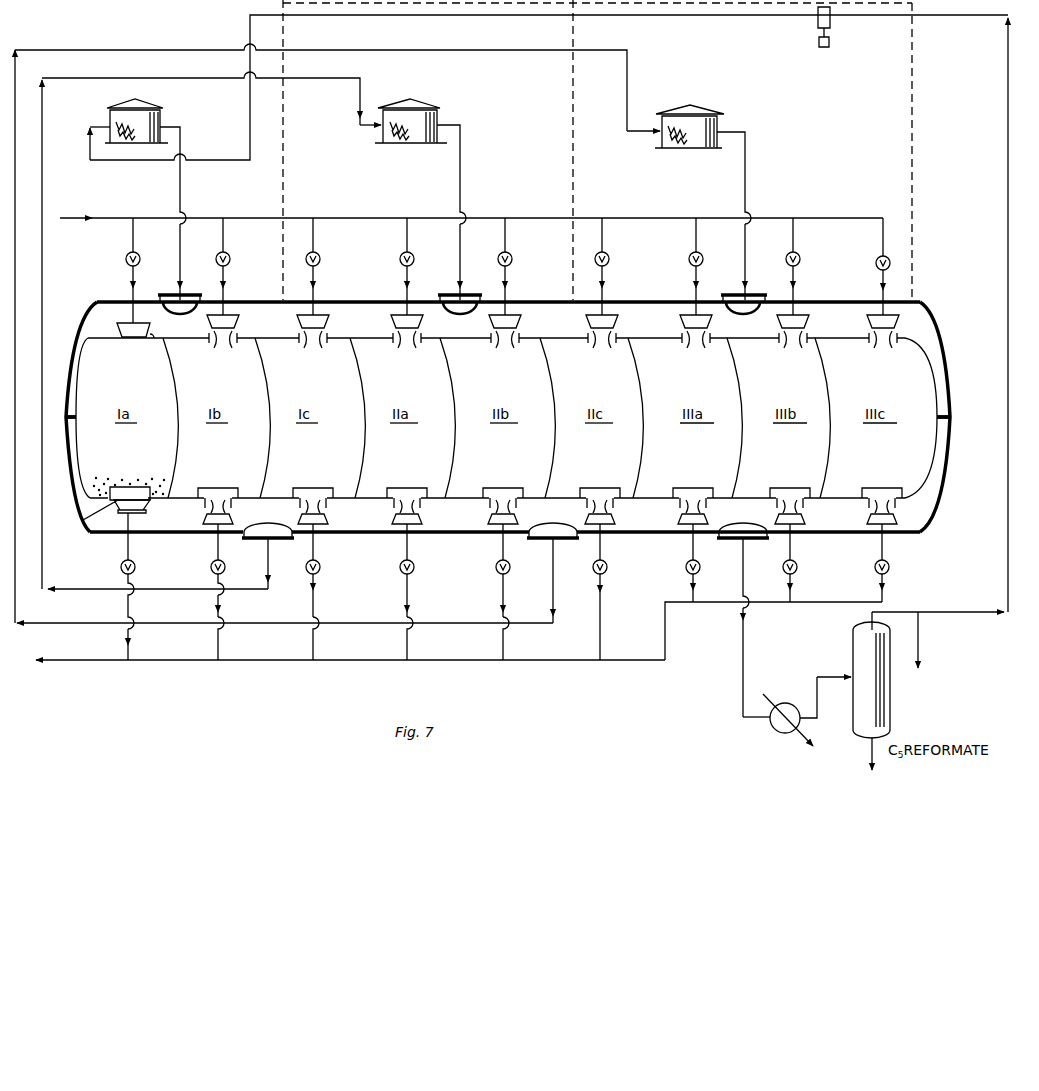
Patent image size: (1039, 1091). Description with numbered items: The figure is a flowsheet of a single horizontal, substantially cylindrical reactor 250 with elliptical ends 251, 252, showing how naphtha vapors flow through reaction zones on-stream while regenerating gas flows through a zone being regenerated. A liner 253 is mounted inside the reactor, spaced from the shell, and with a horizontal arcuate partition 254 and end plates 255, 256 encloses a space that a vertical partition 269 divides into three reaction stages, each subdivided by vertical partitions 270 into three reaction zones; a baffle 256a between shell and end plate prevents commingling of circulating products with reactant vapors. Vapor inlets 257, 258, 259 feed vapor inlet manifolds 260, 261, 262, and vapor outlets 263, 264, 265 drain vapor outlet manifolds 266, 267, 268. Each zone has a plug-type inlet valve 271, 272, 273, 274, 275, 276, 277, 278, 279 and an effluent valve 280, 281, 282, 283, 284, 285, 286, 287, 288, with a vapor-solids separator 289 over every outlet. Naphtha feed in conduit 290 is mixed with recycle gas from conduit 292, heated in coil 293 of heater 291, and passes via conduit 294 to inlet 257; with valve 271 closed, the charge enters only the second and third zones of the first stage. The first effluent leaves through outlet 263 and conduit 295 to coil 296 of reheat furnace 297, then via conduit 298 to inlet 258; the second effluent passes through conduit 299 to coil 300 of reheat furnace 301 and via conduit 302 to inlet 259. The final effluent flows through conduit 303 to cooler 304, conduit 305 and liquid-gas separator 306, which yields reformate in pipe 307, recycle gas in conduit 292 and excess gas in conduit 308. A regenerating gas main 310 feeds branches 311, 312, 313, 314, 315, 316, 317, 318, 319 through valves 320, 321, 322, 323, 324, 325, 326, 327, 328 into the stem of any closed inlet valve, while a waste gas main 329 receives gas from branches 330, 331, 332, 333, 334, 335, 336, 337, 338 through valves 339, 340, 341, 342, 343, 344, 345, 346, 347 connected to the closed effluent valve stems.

The reactor 250 is at (912, 300).
The elliptical end 251 is at (93, 303).
The elliptical end 252 is at (938, 339).
The liner 253 is at (170, 498).
The horizontal arcuate partition 254 is at (300, 350).
The end plate 255 is at (80, 392).
The end plate 256 is at (946, 394).
The baffle 256a is at (72, 420).
The vapor inlet 257 is at (217, 282).
The vapor inlet 258 is at (494, 283).
The vapor inlet 259 is at (782, 284).
The vapor inlet manifold 260 is at (196, 332).
The vapor inlet manifold 261 is at (562, 333).
The vapor inlet manifold 262 is at (858, 333).
The vapor outlet 263 is at (294, 540).
The vapor outlet 264 is at (586, 540).
The vapor outlet 265 is at (770, 540).
The vapor outlet manifold 266 is at (170, 534).
The vapor outlet manifold 267 is at (433, 534).
The vapor outlet manifold 268 is at (808, 534).
The vertical partition 269 is at (362, 371).
The vertical partition 270 is at (176, 373).
The reaction zone vapor inlet valve 271 is at (152, 342).
The reaction zone vapor inlet valve 272 is at (238, 317).
The reaction zone vapor inlet valve 273 is at (326, 319).
The reaction zone vapor inlet valve 274 is at (430, 299).
The reaction zone vapor inlet valve 275 is at (545, 303).
The reaction zone vapor inlet valve 276 is at (625, 321).
The reaction zone vapor inlet valve 277 is at (687, 331).
The reaction zone vapor inlet valve 278 is at (804, 316).
The reaction zone vapor inlet valve 279 is at (902, 336).
The vapor outlet valve 280 is at (83, 520).
The vapor outlet valve 281 is at (208, 509).
The vapor outlet valve 282 is at (305, 506).
The vapor outlet valve 283 is at (405, 503).
The vapor outlet valve 284 is at (494, 505).
The vapor outlet valve 285 is at (590, 504).
The vapor outlet valve 286 is at (686, 507).
The vapor outlet valve 287 is at (780, 505).
The vapor outlet valve 288 is at (872, 505).
The vapor-solids separator 289 is at (135, 487).
The conduit 290 is at (90, 178).
The heater 291 is at (160, 112).
The conduit 292 is at (748, 17).
The coil 293 is at (118, 145).
The conduit 294 is at (180, 178).
The conduit 295 is at (48, 548).
The coil 296 is at (392, 145).
The heater 297 is at (425, 104).
The conduit 298 is at (460, 163).
The conduit 299 is at (490, 52).
The coil 300 is at (680, 150).
The reheat furnace 301 is at (727, 96).
The conduit 302 is at (745, 165).
The conduit 303 is at (745, 645).
The cooler 304 is at (784, 705).
The conduit 305 is at (834, 678).
The liquid-gas separator 306 is at (890, 692).
The pipe 307 is at (871, 749).
The conduit 308 is at (918, 637).
The regenerating gas main 310 is at (393, 218).
The regenerating gas main branch 311 is at (133, 238).
The regenerating gas main branch 312 is at (223, 238).
The regenerating gas main branch 313 is at (313, 238).
The regenerating gas main branch 314 is at (407, 238).
The regenerating gas main branch 315 is at (505, 238).
The regenerating gas main branch 316 is at (602, 238).
The regenerating gas main branch 317 is at (696, 238).
The regenerating gas main branch 318 is at (793, 238).
The regenerating gas main branch 319 is at (882, 250).
The block valve 320 is at (140, 261).
The block valve 321 is at (230, 261).
The block valve 322 is at (320, 261).
The block valve 323 is at (414, 261).
The block valve 324 is at (512, 258).
The block valve 325 is at (609, 261).
The block valve 326 is at (703, 260).
The block valve 327 is at (800, 260).
The block valve 328 is at (876, 266).
The waste gas main 329 is at (455, 662).
The waste gas main branch 330 is at (127, 546).
The waste gas main branch 331 is at (220, 546).
The waste gas main branch 332 is at (313, 548).
The waste gas main branch 333 is at (406, 545).
The waste gas main branch 334 is at (505, 546).
The waste gas main branch 335 is at (600, 548).
The waste gas main branch 336 is at (690, 548).
The waste gas main branch 337 is at (794, 548).
The waste gas main branch 338 is at (882, 548).
The block valve 339 is at (135, 569).
The block valve 340 is at (225, 569).
The block valve 341 is at (320, 569).
The block valve 342 is at (414, 569).
The block valve 343 is at (510, 569).
The block valve 344 is at (607, 569).
The block valve 345 is at (688, 574).
The block valve 346 is at (797, 571).
The block valve 347 is at (889, 569).